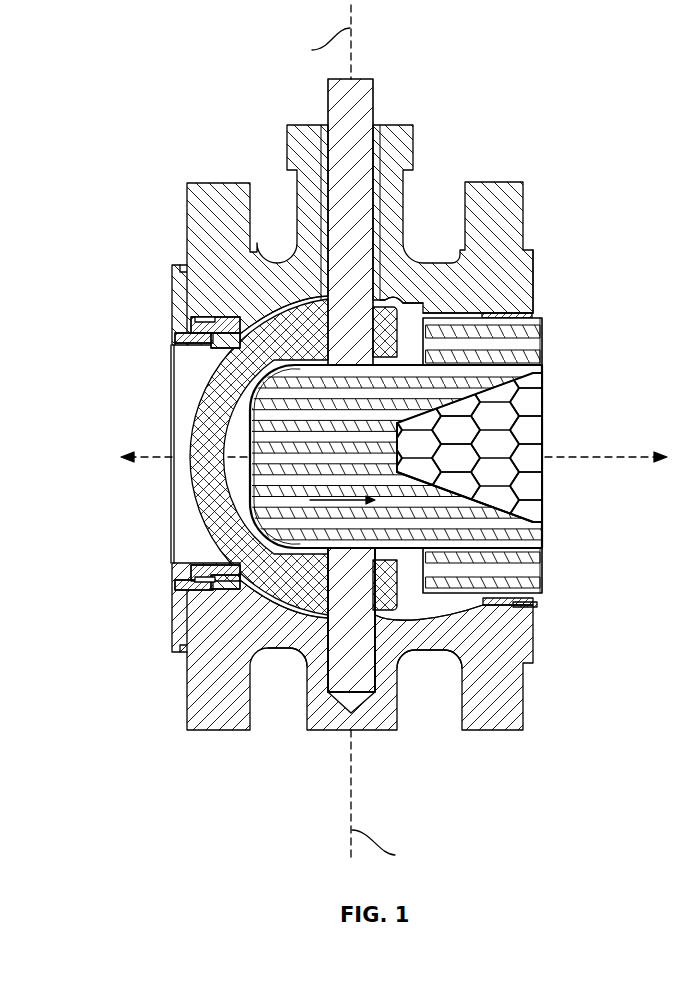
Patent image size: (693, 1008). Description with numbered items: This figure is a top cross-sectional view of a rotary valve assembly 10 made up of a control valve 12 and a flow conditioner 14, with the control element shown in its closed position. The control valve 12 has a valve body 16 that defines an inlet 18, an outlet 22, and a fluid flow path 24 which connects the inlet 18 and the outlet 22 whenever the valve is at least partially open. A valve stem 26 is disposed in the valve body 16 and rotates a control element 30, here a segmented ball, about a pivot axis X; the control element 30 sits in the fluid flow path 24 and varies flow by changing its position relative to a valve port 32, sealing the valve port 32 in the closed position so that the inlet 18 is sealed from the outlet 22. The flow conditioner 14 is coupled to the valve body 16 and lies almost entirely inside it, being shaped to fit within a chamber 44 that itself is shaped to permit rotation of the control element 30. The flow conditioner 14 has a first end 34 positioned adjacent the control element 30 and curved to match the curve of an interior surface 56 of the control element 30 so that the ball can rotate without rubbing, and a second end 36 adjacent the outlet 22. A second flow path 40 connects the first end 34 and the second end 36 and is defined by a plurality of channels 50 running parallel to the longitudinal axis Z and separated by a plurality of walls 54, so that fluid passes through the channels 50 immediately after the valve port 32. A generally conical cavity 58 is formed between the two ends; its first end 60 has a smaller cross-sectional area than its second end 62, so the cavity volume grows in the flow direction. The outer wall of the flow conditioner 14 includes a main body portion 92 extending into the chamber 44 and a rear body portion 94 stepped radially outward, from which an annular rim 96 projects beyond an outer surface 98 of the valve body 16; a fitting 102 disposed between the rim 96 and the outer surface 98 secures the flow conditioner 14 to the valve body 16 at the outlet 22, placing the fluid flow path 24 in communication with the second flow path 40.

The rotary valve assembly 10 is at (198, 120).
The control valve 12 is at (110, 226).
The flow conditioner 14 is at (535, 333).
The valve body 16 is at (187, 223).
The inlet 18 is at (180, 497).
The outlet 22 is at (547, 577).
The fluid flow path 24 is at (403, 303).
The valve stem 26 is at (367, 115).
The control element 30 is at (225, 392).
The valve port 32 is at (230, 572).
The first end 34 is at (277, 417).
The second end 36 is at (547, 365).
The second flow path 40 is at (345, 500).
The chamber 44 is at (410, 655).
The plurality of channels 50 is at (507, 568).
The plurality of walls 54 is at (320, 532).
The interior surface 56 is at (238, 435).
The cavity 58 is at (542, 463).
The first end of the cavity 60 is at (542, 523).
The second end of the cavity 62 is at (547, 413).
The main body portion 92 is at (413, 603).
The rear body portion 94 is at (472, 313).
The annular rim 96 is at (540, 313).
The outer surface 98 is at (533, 728).
The fitting 102 is at (535, 273).